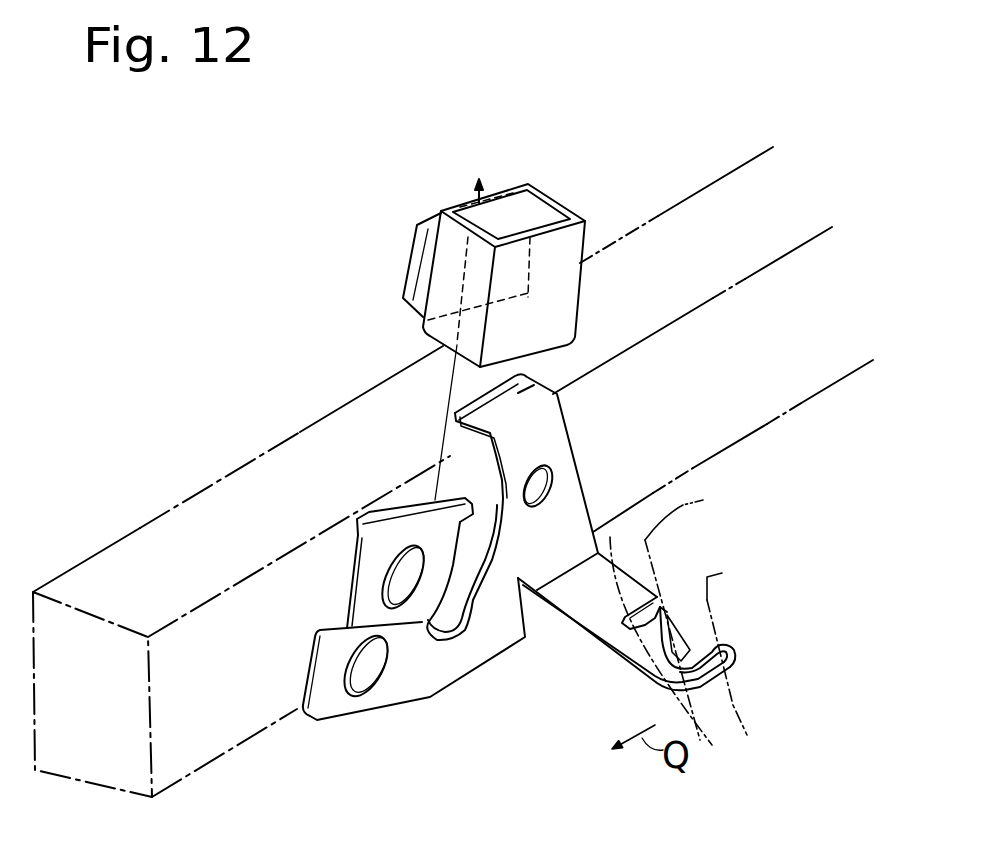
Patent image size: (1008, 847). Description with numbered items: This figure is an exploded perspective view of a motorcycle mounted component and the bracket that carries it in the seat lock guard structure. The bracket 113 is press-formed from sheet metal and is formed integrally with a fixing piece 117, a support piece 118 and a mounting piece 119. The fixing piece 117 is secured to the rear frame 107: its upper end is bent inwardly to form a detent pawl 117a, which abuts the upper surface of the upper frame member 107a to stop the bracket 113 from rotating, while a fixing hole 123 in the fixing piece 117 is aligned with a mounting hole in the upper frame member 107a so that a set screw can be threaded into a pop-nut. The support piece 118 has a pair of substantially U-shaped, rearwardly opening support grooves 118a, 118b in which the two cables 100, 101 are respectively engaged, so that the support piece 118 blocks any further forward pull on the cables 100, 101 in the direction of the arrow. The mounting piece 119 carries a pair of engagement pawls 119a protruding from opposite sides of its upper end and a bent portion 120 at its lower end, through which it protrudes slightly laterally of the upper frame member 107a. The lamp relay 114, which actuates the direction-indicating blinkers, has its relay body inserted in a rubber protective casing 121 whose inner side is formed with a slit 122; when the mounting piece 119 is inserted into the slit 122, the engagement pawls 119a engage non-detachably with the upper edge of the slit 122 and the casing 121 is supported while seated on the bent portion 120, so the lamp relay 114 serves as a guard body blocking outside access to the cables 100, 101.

The rear frame 107 is at (453, 437).
The upper frame member 107a is at (303, 433).
The lamp relay 114 is at (516, 324).
The protective casing 121 is at (548, 305).
The slit 122 is at (432, 224).
The fixing piece 117 is at (603, 482).
The detent pawl 117a is at (524, 374).
The fixing hole 123 is at (553, 488).
The mounting piece 119 is at (373, 610).
The engagement pawls 119a is at (358, 526).
The bent portion 120 is at (297, 668).
The support piece 118 is at (683, 636).
The support groove 118a is at (735, 645).
The support groove 118b is at (665, 611).
The bracket 113 is at (633, 569).
The cable 101 is at (703, 500).
The cable 100 is at (722, 573).